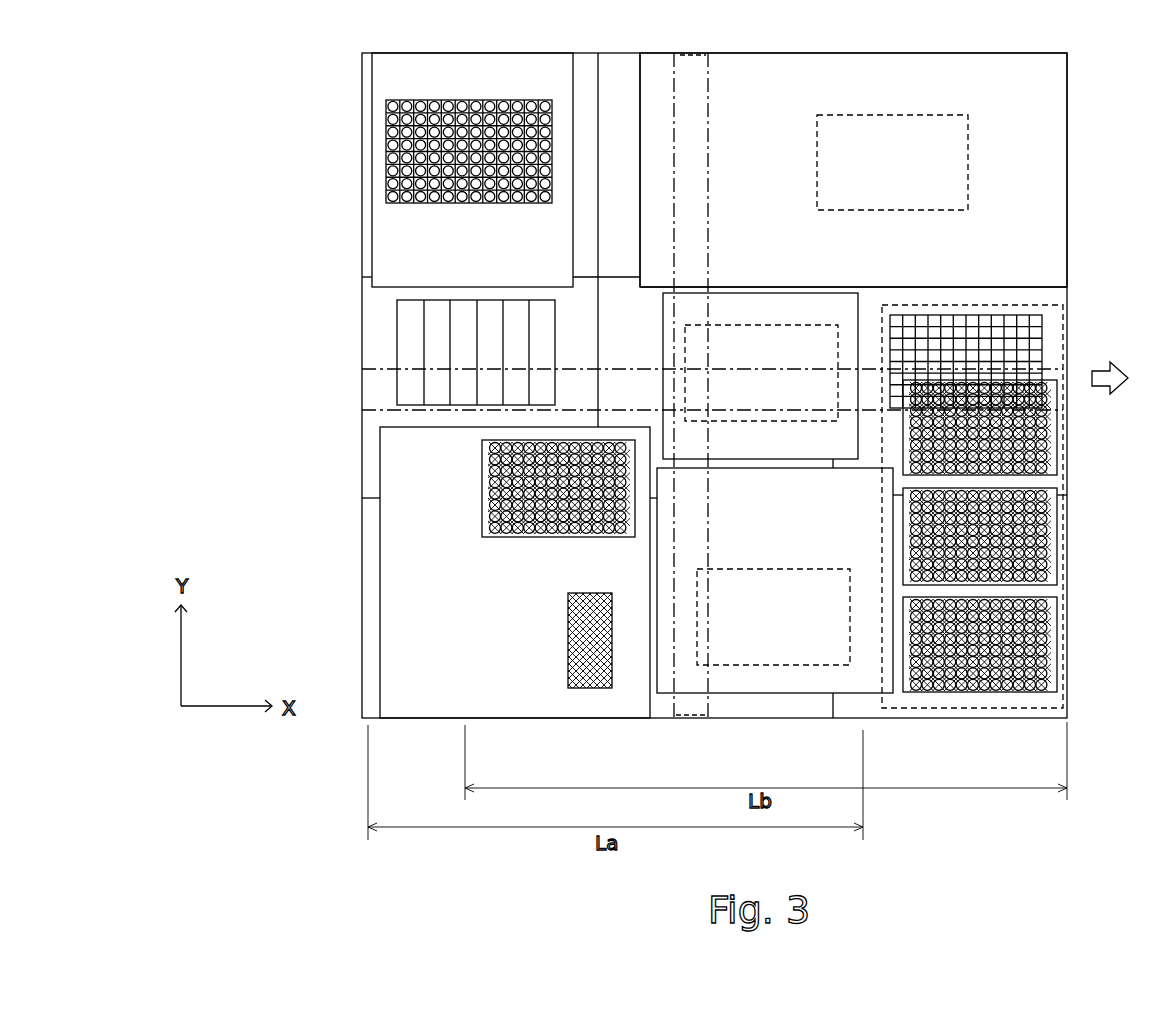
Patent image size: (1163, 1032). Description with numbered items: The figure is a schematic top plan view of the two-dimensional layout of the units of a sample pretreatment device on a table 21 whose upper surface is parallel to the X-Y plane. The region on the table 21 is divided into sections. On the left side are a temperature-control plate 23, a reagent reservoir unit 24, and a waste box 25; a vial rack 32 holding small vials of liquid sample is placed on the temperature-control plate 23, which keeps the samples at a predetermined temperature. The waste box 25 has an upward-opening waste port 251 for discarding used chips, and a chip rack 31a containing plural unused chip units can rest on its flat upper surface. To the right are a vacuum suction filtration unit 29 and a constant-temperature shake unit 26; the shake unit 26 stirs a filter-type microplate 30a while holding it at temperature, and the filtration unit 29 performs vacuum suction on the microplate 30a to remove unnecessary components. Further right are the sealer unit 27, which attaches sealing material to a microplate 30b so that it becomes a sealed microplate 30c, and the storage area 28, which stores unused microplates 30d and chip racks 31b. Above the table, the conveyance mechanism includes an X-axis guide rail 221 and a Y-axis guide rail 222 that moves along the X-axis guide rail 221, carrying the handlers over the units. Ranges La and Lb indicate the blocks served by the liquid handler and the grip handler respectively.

The table 21 is at (370, 295).
The X-axis guide rail 221 is at (357, 367).
The Y-axis guide rail 222 is at (708, 78).
The temperature-control plate 23 is at (377, 145).
The reagent reservoir unit 24 is at (398, 333).
The waste box 25 is at (422, 712).
The waste port 251 is at (582, 690).
The constant-temperature shake unit 26 is at (839, 684).
The sealer unit 27 is at (1063, 125).
The storage area 28 is at (1012, 708).
The vacuum suction filtration unit 29 is at (853, 307).
The microplate 30a is at (728, 665).
The microplate 30b is at (800, 323).
The microplate 30c is at (933, 113).
The unused microplates 30d is at (1042, 340).
The chip rack 31a is at (485, 482).
The chip racks 31b is at (1053, 433).
The vial rack 32 is at (432, 98).